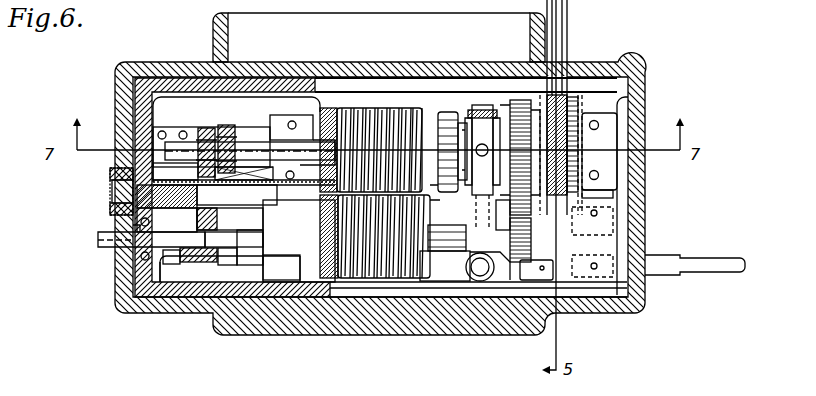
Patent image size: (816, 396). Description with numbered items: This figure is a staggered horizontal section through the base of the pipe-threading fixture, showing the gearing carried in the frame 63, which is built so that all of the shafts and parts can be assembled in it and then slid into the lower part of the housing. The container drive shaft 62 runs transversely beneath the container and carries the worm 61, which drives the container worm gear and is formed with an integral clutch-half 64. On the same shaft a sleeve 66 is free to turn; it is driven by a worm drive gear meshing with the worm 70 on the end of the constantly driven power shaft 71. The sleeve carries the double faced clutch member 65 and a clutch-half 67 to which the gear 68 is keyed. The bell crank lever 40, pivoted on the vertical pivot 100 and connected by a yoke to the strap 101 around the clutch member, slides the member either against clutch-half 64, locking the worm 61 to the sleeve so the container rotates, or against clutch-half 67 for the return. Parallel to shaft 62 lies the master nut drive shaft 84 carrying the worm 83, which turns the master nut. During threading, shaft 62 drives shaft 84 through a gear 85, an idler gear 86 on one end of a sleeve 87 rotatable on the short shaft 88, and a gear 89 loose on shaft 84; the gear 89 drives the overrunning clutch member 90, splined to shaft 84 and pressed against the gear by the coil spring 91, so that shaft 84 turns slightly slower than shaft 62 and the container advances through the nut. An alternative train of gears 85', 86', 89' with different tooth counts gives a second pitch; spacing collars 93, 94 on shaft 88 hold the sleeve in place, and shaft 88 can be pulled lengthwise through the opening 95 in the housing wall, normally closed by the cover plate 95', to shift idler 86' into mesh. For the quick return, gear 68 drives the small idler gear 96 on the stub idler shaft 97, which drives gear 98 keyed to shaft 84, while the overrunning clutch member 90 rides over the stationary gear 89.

The lever 40 is at (672, 252).
The worm 61 is at (398, 110).
The container drive shaft 62 is at (279, 138).
The frame 63 is at (194, 312).
The clutch-half 64 is at (447, 112).
The double faced clutch member 65 is at (479, 105).
The sleeve 66 is at (462, 192).
The clutch-half 67 is at (522, 100).
The gear 68 is at (550, 72).
The worm 70 is at (598, 120).
The power shaft 71 is at (567, 40).
The worm 83 is at (428, 265).
The master nut drive shaft 84 is at (108, 247).
The gear 85 is at (244, 140).
The gear 85' is at (230, 138).
The idler gear 86 is at (175, 172).
The idler gear 86' is at (227, 235).
The sleeve 87 is at (254, 175).
The short shaft 88 is at (207, 196).
The gear 89 is at (216, 264).
The gear 89' is at (268, 269).
The overrunning clutch member 90 is at (180, 262).
The coil spring 91 is at (168, 300).
The spacing collar 93 is at (167, 220).
The spacing collar 94 is at (286, 241).
The opening 95 is at (106, 191).
The cover plate 95' is at (105, 204).
The idler gear 96 is at (478, 210).
The stub idler shaft 97 is at (496, 214).
The gear 98 is at (528, 262).
The vertical pivot 100 is at (480, 281).
The strap 101 is at (497, 110).